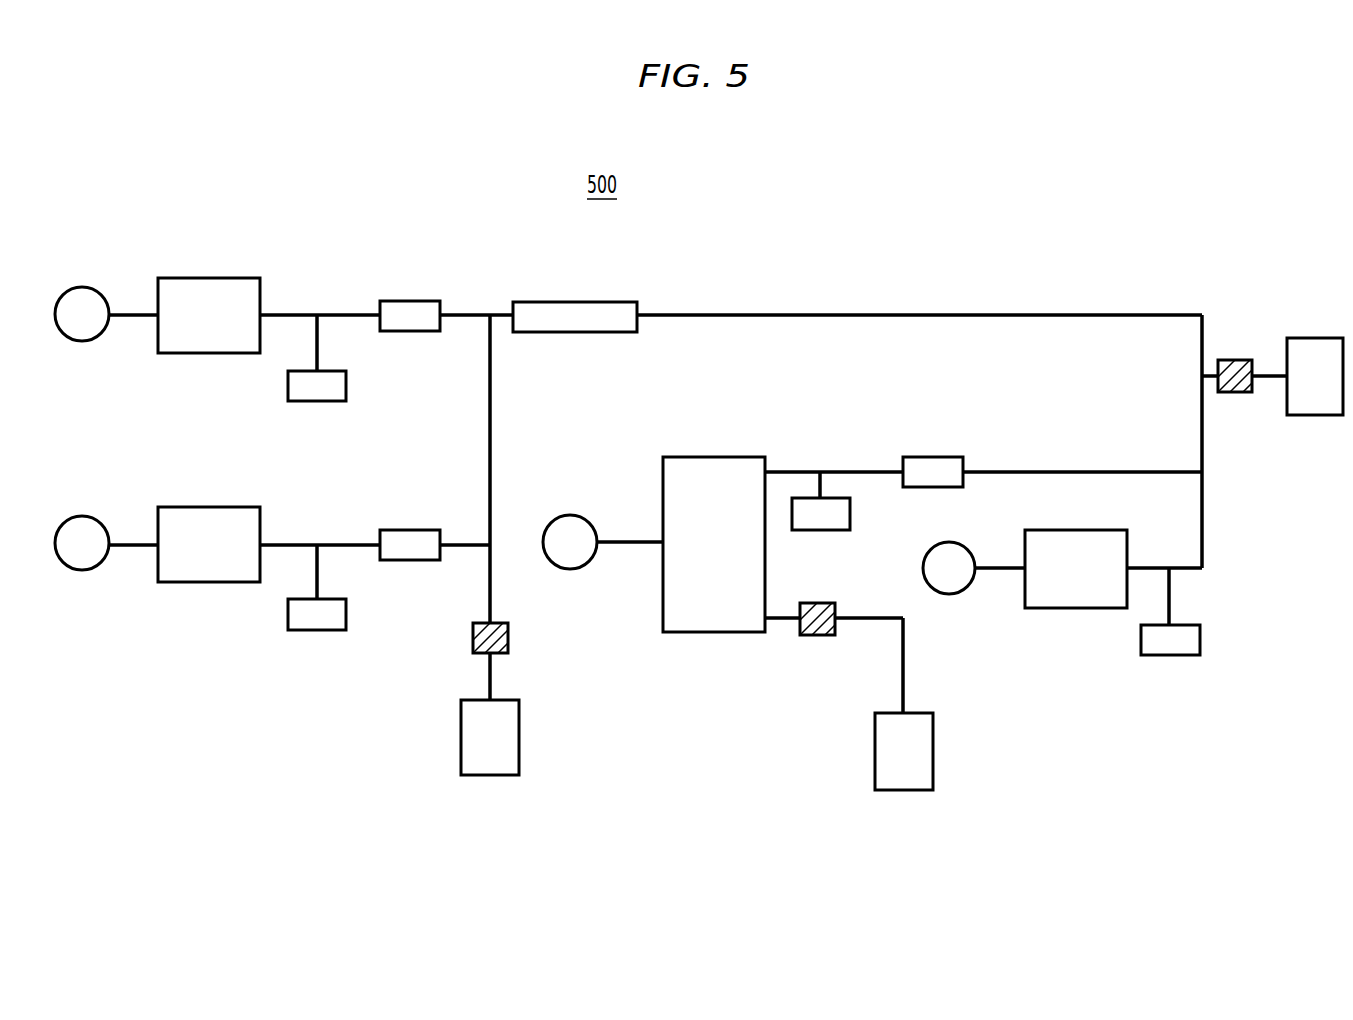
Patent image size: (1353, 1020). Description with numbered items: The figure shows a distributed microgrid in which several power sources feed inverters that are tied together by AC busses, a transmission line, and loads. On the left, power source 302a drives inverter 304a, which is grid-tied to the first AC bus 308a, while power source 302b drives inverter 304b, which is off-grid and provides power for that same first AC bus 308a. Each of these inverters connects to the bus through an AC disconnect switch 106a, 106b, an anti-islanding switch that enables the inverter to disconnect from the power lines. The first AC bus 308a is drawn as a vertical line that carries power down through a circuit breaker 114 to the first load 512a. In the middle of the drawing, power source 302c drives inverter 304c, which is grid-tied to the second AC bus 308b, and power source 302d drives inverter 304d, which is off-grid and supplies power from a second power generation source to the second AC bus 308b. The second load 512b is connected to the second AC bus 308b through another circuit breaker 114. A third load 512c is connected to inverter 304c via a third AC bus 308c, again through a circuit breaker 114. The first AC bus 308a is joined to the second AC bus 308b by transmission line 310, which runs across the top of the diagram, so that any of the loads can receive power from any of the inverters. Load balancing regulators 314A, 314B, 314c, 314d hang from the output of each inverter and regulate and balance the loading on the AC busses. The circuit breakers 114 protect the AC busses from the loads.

The power source 302a is at (85, 286).
The power source 302b is at (85, 515).
The power source 302c is at (570, 570).
The power source 302d is at (953, 595).
The inverter 304a is at (262, 293).
The inverter 304b is at (262, 522).
The inverter 304c is at (702, 456).
The inverter 304d is at (1065, 610).
The load balancing regulator 314A is at (317, 402).
The load balancing regulator 314B is at (317, 631).
The load balancing regulator 314c is at (850, 529).
The load balancing regulator 314d is at (1165, 657).
The AC disconnect switch 106a is at (410, 300).
The AC disconnect switch 106b is at (410, 530).
The transmission line 310 is at (550, 333).
The first AC bus 308a is at (490, 452).
The second AC bus 308b is at (1202, 550).
The third AC bus 308c is at (783, 622).
The circuit breaker 114 is at (473, 645).
The first load 512a is at (519, 716).
The second load 512b is at (1311, 337).
The third load 512c is at (933, 728).